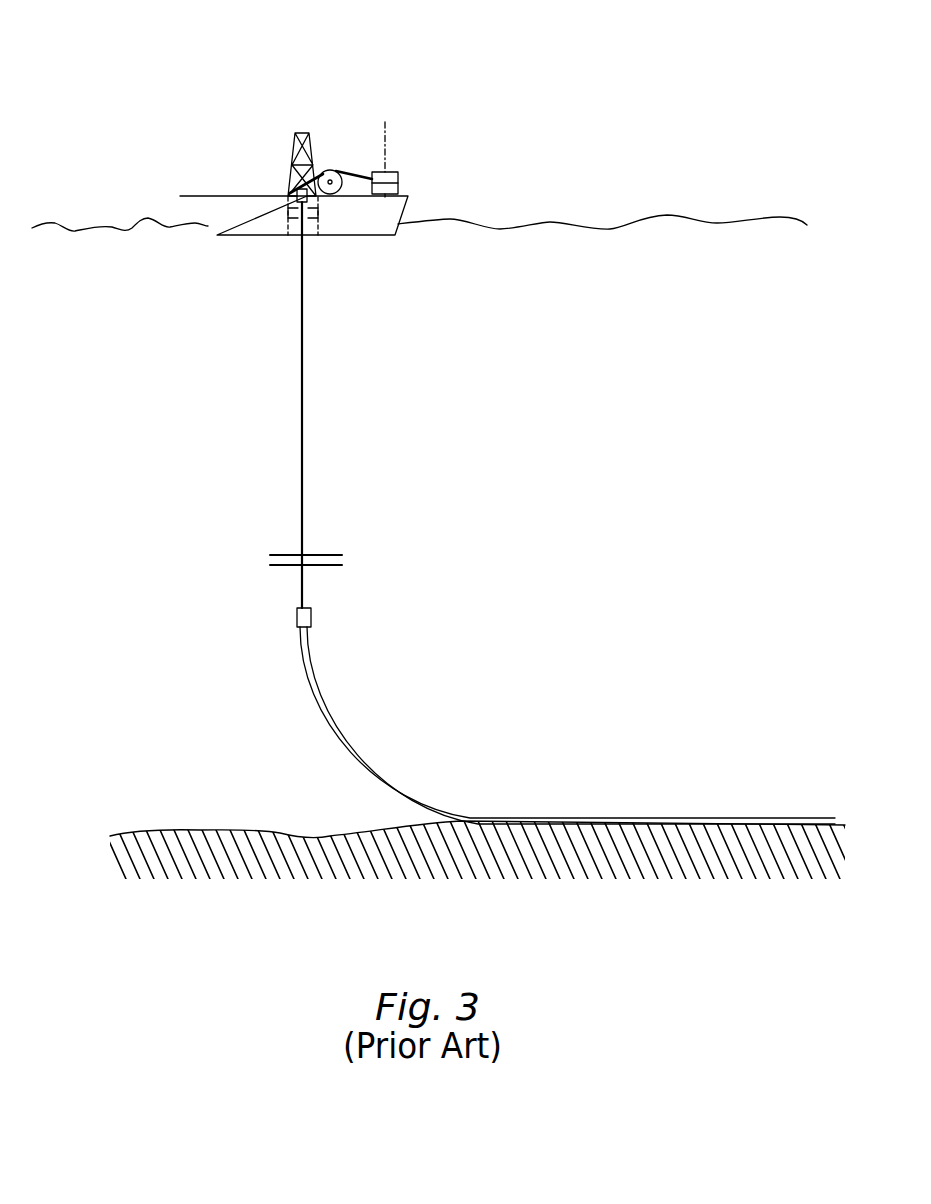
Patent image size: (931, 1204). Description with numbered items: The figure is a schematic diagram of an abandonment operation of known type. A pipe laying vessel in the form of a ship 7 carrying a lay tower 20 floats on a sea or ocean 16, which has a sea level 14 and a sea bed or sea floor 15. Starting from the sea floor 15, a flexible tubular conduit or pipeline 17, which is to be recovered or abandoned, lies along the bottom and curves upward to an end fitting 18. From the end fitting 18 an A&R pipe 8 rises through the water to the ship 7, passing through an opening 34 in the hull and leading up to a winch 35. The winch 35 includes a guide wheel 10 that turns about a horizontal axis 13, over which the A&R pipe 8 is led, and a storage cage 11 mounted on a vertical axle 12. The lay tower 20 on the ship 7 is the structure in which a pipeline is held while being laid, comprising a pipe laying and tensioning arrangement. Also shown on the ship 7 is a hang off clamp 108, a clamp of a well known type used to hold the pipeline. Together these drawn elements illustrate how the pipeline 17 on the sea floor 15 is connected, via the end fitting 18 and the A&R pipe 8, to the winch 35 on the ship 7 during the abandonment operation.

The ship 7 is at (230, 86).
The lay tower 20 is at (291, 190).
The horizontal axis 13 is at (329, 182).
The guide wheel 10 is at (330, 172).
The vertical axle 12 is at (385, 140).
The storage cage 11 is at (399, 178).
The sea level 14 is at (667, 216).
The winch 35 is at (295, 193).
The hang off clamp 108 is at (307, 212).
The opening 34 is at (268, 227).
The A&R pipe 8 is at (303, 402).
The sea or ocean 16 is at (595, 494).
The end fitting 18 is at (311, 614).
The flexible tubular conduit or pipeline 17 is at (377, 784).
The sea bed or sea floor 15 is at (218, 873).